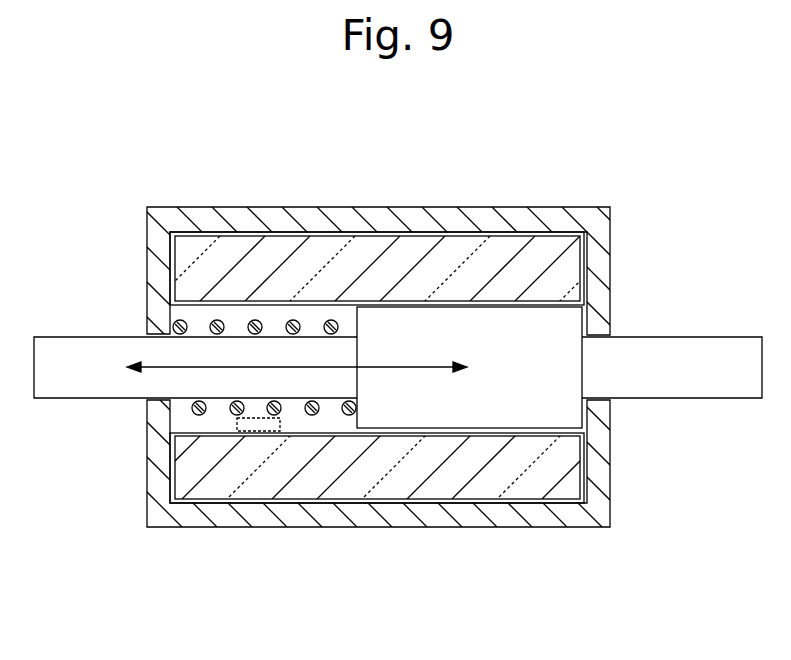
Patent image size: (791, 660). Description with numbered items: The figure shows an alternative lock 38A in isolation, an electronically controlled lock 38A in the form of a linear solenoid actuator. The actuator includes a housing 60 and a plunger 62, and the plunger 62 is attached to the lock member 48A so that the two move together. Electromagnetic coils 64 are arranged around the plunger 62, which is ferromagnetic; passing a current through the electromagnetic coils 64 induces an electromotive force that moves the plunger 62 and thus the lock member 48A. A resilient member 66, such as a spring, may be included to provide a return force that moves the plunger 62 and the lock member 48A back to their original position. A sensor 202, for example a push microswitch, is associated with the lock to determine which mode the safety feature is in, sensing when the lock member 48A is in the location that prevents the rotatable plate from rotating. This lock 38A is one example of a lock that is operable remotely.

The electronically controlled lock 38A is at (558, 150).
The housing 60 is at (226, 215).
The plunger 62 is at (418, 322).
The electromagnetic coils 64 is at (533, 472).
The resilient member 66 is at (190, 410).
The lock member 48A is at (77, 352).
The sensor 202 is at (240, 432).